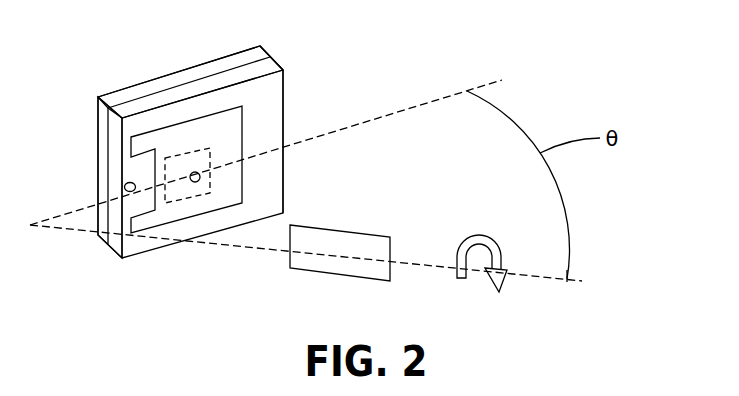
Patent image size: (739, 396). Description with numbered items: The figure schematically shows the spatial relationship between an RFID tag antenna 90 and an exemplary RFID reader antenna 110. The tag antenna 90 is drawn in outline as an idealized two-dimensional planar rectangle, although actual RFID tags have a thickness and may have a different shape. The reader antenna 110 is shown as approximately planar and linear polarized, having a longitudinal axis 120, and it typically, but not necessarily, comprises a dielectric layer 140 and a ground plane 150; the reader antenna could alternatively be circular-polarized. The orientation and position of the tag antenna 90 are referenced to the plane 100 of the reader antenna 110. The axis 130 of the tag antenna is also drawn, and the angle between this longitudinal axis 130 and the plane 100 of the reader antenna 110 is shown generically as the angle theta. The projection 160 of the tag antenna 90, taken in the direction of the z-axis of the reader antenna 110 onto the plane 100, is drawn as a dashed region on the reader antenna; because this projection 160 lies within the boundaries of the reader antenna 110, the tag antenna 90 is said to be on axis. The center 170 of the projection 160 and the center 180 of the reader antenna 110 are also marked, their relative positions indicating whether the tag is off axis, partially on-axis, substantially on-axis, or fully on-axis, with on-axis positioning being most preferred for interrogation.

The tag antenna 90 is at (365, 240).
The plane 100 is at (285, 85).
The reader antenna 110 is at (278, 89).
The longitudinal axis 120 is at (243, 115).
The axis 130 is at (344, 253).
The dielectric layer 140 is at (115, 143).
The ground plane 150 is at (127, 88).
The projection 160 is at (187, 157).
The center of the projection 170 is at (199, 181).
The center of the reader antenna 180 is at (191, 181).